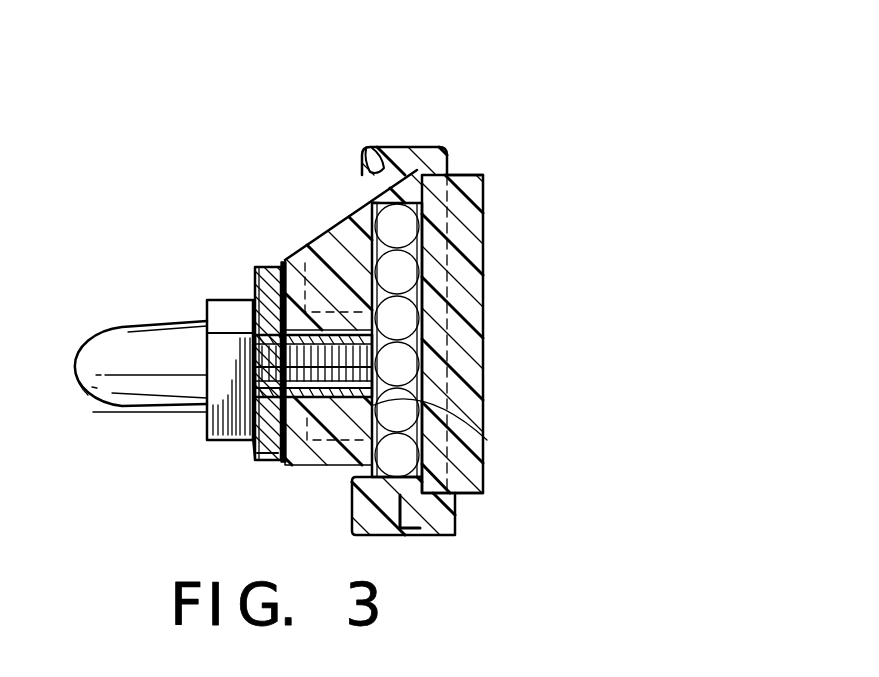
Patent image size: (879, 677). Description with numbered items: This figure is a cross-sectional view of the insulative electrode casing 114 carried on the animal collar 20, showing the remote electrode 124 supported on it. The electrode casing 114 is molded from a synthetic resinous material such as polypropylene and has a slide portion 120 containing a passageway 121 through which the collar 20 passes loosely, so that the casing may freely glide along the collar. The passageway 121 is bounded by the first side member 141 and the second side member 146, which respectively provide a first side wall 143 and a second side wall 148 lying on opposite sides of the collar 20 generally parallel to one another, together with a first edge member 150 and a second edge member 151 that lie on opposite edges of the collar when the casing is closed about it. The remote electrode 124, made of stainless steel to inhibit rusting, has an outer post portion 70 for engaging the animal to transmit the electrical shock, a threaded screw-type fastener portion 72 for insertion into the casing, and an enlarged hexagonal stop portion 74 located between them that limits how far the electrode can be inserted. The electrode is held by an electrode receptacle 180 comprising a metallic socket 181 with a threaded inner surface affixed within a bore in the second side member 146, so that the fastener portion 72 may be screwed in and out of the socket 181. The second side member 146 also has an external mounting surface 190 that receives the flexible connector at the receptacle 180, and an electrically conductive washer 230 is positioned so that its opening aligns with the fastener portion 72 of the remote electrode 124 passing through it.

The electrode casing 114 is at (485, 300).
The first side member 141 is at (484, 207).
The collar 20 is at (484, 492).
The second side wall 148 is at (487, 440).
The slide portion 120 is at (428, 198).
The passageway 121 is at (378, 147).
The first edge member 150 is at (411, 195).
The first side wall 143 is at (352, 198).
The electrode receptacle 180 is at (294, 456).
The second side member 146 is at (352, 470).
The second edge member 151 is at (408, 530).
The fastener portion 72 is at (305, 265).
The metallic socket 181 is at (283, 278).
The electrically conductive washer 230 is at (254, 298).
The enlarged hexagonal stop portion 74 is at (223, 318).
The remote electrode 124 is at (110, 325).
The outer post portion 70 is at (95, 413).
The external mounting surface 190 is at (253, 450).